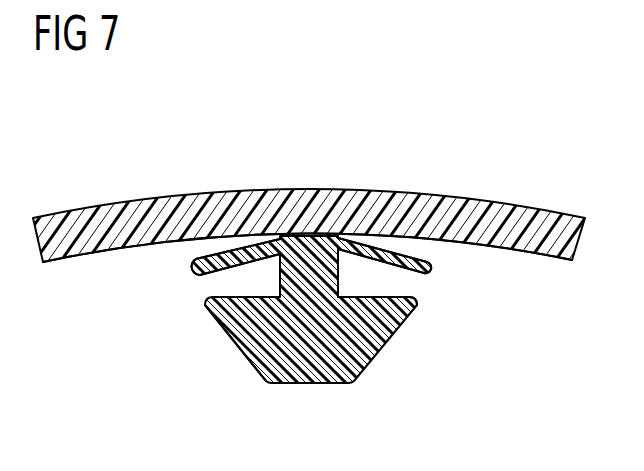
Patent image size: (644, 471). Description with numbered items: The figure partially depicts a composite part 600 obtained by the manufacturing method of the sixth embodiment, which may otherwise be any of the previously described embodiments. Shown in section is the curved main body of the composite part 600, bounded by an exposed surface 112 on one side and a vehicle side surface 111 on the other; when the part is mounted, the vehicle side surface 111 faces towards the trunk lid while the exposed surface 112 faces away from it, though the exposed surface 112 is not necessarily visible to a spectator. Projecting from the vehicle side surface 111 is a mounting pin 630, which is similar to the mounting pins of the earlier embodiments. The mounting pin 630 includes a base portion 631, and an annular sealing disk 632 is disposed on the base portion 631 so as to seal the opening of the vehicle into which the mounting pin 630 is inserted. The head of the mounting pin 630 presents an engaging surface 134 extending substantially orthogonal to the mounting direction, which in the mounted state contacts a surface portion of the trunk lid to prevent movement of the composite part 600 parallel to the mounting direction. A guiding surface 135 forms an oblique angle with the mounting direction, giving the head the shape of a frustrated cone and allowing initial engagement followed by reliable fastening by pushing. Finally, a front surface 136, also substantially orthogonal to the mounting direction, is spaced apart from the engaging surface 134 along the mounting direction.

The composite part 600 is at (237, 114).
The exposed surface 112 is at (147, 197).
The vehicle side surface 111 is at (139, 247).
The mounting pin 630 is at (186, 320).
The base portion 631 is at (280, 282).
The annular sealing disk 632 is at (425, 264).
The engaging surface 134 is at (383, 299).
The guiding surface 135 is at (230, 338).
The front surface 136 is at (295, 387).